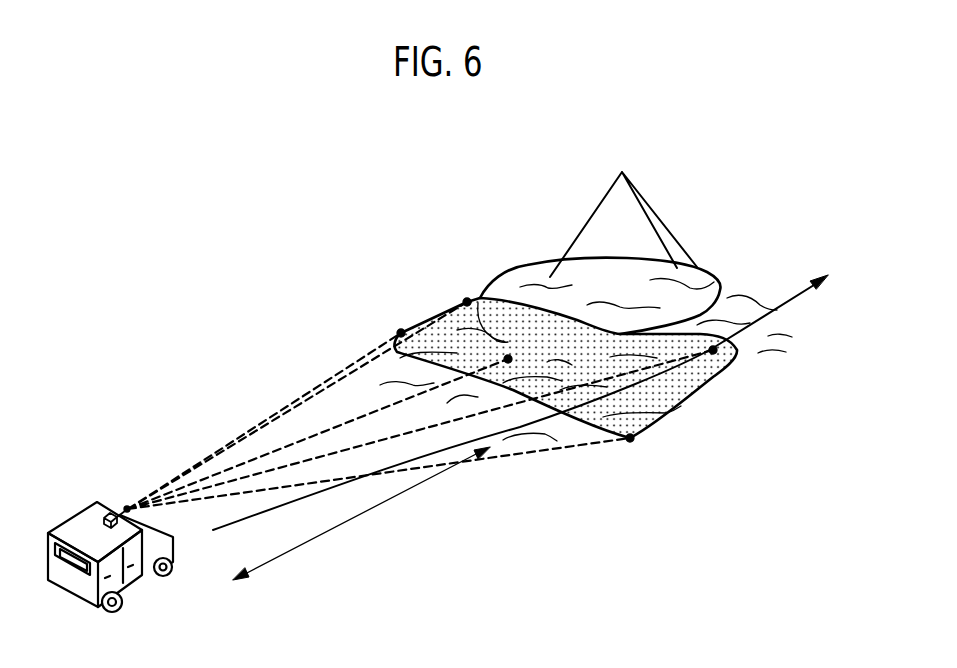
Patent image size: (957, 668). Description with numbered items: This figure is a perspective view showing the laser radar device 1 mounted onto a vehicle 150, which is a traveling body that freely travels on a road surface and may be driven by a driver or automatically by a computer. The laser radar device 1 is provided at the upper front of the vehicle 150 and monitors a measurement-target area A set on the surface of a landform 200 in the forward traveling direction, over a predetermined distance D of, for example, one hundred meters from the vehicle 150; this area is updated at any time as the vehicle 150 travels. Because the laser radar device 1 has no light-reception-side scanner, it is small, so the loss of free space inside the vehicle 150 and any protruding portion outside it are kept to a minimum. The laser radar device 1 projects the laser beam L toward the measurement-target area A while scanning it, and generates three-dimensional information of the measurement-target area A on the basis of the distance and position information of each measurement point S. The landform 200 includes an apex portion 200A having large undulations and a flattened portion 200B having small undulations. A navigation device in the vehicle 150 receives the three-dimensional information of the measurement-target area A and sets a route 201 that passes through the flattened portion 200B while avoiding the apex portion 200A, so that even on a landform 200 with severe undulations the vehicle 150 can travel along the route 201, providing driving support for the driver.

The vehicle 150 is at (80, 520).
The laser radar device 1 is at (110, 510).
The laser beam L is at (300, 400).
The measurement point S is at (401, 333).
The predetermined distance D is at (347, 521).
The measurement-target area A is at (680, 393).
The landform 200 is at (707, 275).
The apex portion 200A is at (632, 192).
The flattened portion 200B is at (787, 347).
The route 201 is at (795, 297).